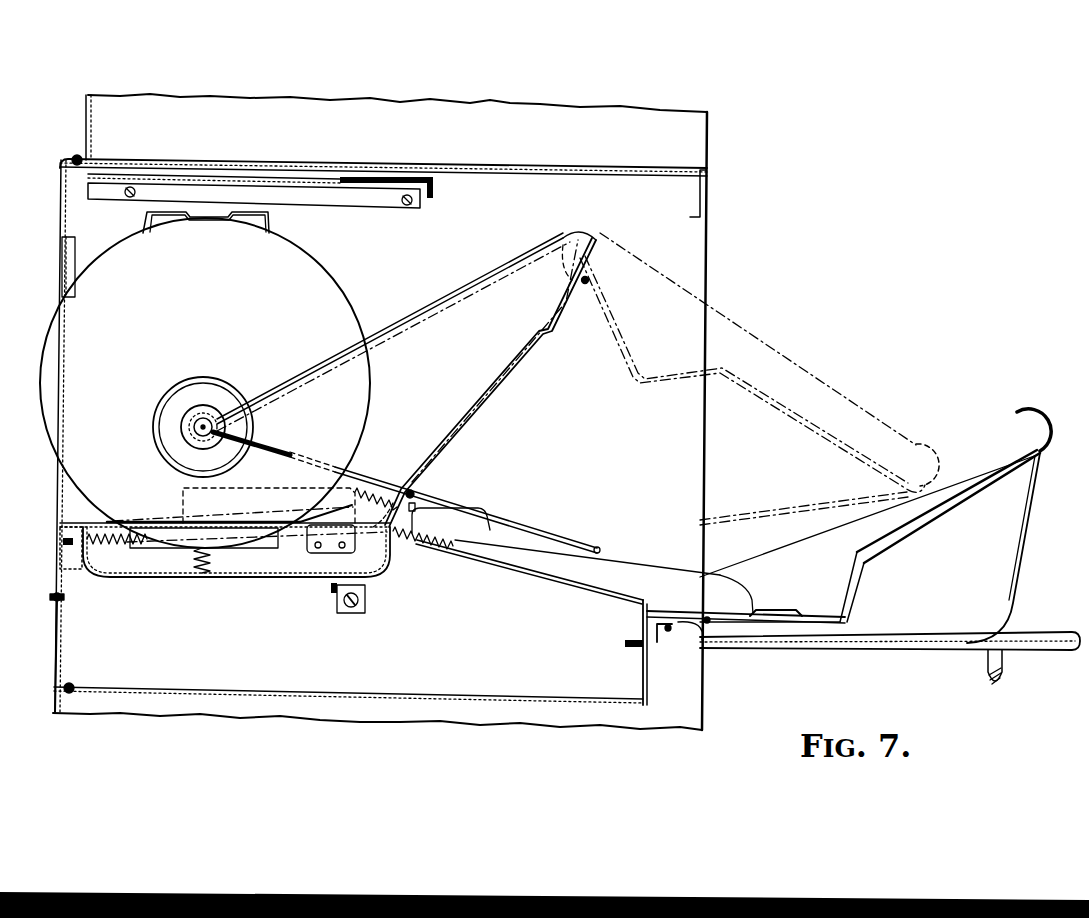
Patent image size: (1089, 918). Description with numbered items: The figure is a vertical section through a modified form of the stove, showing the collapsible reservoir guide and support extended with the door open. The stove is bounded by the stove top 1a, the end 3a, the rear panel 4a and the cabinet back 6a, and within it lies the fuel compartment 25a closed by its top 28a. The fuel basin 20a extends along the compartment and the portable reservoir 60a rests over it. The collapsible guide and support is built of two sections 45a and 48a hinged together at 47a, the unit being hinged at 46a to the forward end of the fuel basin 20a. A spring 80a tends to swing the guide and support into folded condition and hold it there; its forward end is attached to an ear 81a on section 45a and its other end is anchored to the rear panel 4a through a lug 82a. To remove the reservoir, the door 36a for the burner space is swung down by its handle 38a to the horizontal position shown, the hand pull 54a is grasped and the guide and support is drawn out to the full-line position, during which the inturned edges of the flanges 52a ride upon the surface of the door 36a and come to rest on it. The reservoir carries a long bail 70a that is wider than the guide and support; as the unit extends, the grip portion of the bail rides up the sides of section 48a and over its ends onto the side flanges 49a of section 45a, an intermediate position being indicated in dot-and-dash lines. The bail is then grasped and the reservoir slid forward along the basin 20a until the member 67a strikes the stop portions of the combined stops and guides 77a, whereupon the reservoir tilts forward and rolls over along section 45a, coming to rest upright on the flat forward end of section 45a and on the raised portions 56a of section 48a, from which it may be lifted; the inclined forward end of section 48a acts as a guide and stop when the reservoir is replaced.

The stove top 1a is at (508, 168).
The end 3a is at (650, 248).
The rear panel 4a is at (60, 212).
The cabinet back 6a is at (95, 122).
The fuel basin 20a is at (283, 567).
The fuel compartment 25a is at (330, 215).
The top of fuel compartment 28a is at (205, 175).
The door 36a is at (800, 648).
The handle 38a is at (995, 682).
The section 45a is at (493, 388).
The hinge connection 46a is at (400, 553).
The hinge connection 47a is at (707, 622).
The section 48a is at (820, 433).
The side flanges 49a is at (443, 403).
The flanges 52a is at (980, 575).
The hand pull 54a is at (920, 440).
The raised portions 56a is at (776, 611).
The reservoir 60a is at (303, 305).
The member 67a is at (122, 521).
The bail 70a is at (420, 310).
The combined stops and guides 77a is at (352, 515).
The spring 80a is at (352, 478).
The ear 81a is at (413, 490).
The lug 82a is at (62, 533).